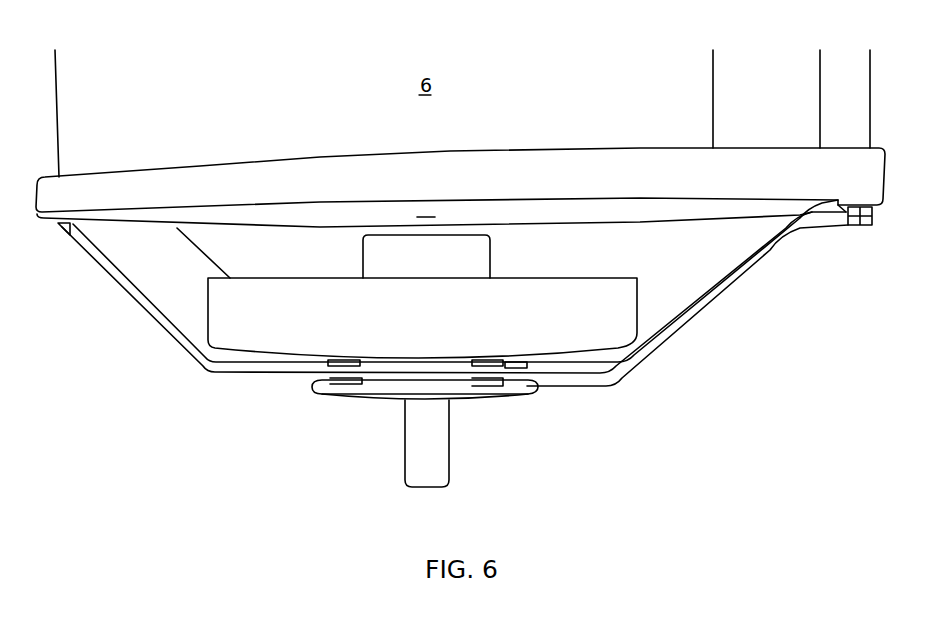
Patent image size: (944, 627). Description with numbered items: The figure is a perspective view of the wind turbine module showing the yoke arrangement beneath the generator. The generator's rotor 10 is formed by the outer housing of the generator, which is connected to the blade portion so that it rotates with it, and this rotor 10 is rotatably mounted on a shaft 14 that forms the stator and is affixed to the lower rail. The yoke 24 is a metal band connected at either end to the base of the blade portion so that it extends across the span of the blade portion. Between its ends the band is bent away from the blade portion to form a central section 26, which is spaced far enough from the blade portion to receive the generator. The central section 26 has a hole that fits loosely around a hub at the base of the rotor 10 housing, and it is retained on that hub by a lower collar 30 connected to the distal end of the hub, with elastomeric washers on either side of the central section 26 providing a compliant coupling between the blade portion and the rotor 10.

The rotor 10 is at (557, 320).
The shaft 14 is at (437, 442).
The yoke 24 is at (148, 323).
The central section 26 is at (280, 368).
The lower collar 30 is at (362, 398).